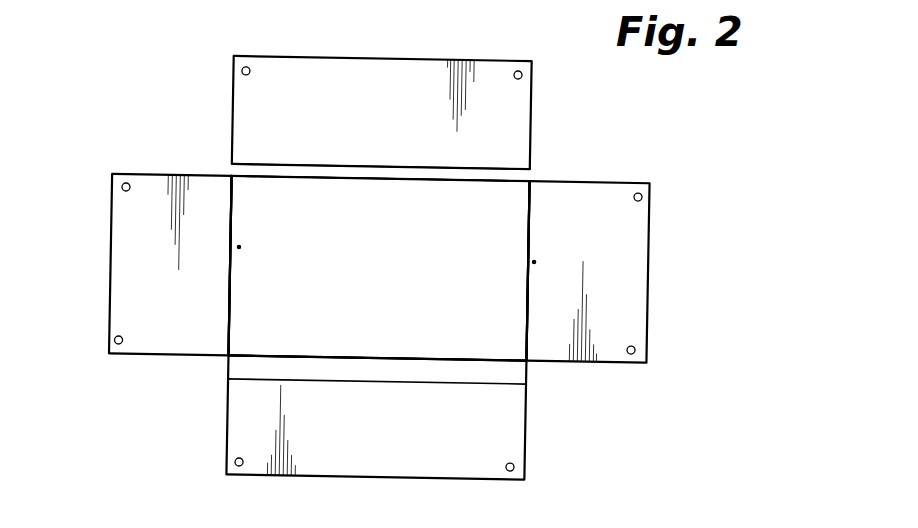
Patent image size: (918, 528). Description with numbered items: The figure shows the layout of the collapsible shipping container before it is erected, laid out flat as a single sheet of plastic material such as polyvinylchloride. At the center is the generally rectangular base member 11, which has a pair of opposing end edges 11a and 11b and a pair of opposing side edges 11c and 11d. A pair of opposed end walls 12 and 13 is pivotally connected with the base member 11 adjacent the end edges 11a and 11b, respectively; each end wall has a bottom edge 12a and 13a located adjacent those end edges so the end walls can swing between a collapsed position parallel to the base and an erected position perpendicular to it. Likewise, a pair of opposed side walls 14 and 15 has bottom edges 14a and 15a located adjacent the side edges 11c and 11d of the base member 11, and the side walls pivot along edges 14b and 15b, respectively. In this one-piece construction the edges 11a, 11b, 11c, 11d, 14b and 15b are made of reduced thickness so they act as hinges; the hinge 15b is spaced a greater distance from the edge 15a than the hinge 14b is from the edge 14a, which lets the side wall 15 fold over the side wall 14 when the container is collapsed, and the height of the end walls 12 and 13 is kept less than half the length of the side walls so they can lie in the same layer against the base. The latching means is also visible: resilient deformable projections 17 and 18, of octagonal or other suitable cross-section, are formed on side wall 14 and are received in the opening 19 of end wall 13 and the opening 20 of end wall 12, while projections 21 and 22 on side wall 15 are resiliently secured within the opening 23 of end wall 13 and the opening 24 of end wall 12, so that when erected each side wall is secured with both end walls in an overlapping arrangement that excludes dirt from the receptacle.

The base member 11 is at (382, 283).
The end edge 11a is at (527, 219).
The end edge 11b is at (232, 239).
The side edge 11c is at (458, 179).
The side edge 11d is at (488, 355).
The end wall 12 is at (630, 253).
The bottom edge 12a is at (528, 303).
The end wall 13 is at (131, 244).
The bottom edge 13a is at (231, 325).
The side wall 14 is at (354, 72).
The bottom edge 14a is at (286, 181).
The edge (hinge) 14b is at (287, 165).
The side wall 15 is at (384, 453).
The bottom edge 15a is at (321, 357).
The edge (hinge) 15b is at (317, 384).
The resilient deformable projection 17 is at (238, 74).
The resilient deformable projection 18 is at (518, 72).
The opening 19 is at (121, 192).
The opening 20 is at (641, 192).
The projection 21 is at (238, 464).
The projection 22 is at (517, 464).
The opening 23 is at (116, 344).
The opening 24 is at (636, 346).